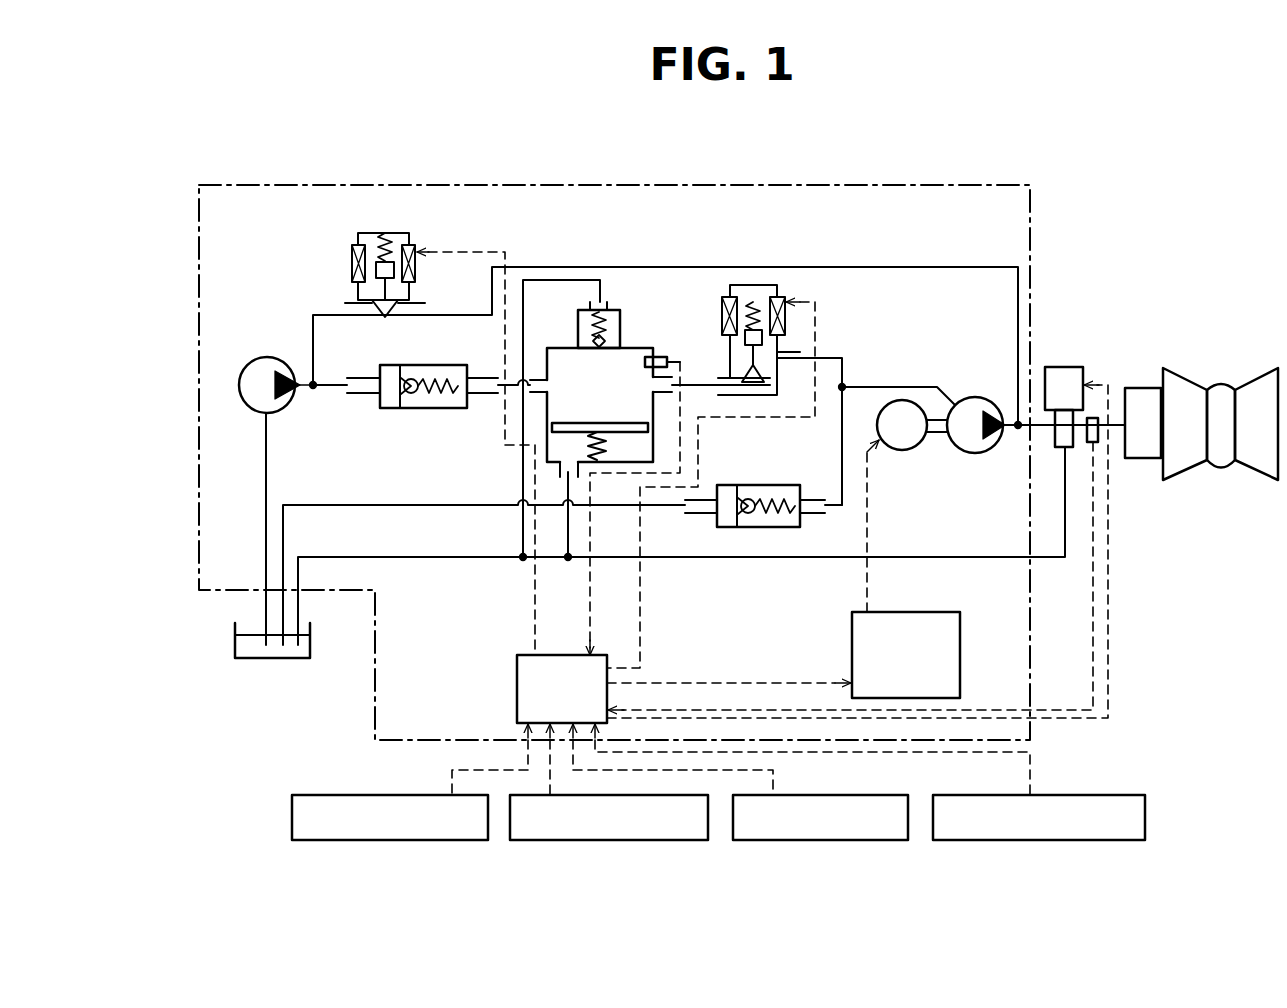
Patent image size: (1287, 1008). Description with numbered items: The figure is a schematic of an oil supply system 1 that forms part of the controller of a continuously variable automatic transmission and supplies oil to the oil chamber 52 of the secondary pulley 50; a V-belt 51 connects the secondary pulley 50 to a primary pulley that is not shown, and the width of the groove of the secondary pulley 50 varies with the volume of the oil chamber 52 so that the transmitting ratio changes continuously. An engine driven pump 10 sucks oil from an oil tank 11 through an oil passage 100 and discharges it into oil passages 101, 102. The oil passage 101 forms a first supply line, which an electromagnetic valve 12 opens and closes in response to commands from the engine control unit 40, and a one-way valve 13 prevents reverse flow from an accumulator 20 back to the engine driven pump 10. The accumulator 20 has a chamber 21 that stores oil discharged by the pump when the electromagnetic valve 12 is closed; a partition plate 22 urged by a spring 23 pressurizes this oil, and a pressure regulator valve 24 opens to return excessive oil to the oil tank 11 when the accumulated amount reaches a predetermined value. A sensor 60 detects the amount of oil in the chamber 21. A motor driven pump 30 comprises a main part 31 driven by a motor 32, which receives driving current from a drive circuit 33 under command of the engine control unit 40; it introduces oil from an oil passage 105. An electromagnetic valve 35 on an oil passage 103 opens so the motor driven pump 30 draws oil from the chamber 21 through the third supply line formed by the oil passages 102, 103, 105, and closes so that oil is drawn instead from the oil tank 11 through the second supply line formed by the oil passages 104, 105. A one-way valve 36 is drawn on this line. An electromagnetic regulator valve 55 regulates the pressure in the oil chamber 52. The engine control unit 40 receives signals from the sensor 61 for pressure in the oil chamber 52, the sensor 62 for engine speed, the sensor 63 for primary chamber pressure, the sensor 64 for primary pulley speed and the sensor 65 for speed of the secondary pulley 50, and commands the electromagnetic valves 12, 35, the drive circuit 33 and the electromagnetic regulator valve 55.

The oil supply system 1 is at (955, 185).
The engine driven pump 10 is at (250, 368).
The oil tank 11 is at (235, 640).
The electromagnetic valve 12 is at (352, 262).
The one-way valve 13 is at (397, 410).
The accumulator 20 is at (637, 348).
The chamber 21 is at (563, 355).
The partition plate 22 is at (552, 428).
The spring 23 is at (585, 446).
The pressure regulator valve 24 is at (623, 347).
The motor driven pump 30 is at (996, 504).
The main part 31 is at (1026, 450).
The motor 32 is at (902, 450).
The drive circuit 33 is at (963, 640).
The electromagnetic valve 35 is at (777, 297).
The check valve 36 is at (758, 485).
The engine control unit 40 is at (517, 672).
The secondary pulley 50 is at (1178, 375).
The V-belt 51 is at (1221, 380).
The oil chamber 52 is at (1133, 388).
The electromagnetic regulator valve 55 is at (1057, 367).
The sensor 60 is at (662, 357).
The sensor 61 is at (1093, 418).
The sensor 62 is at (328, 840).
The sensor 63 is at (545, 840).
The sensor 64 is at (752, 840).
The sensor 65 is at (965, 840).
The oil passage 100 is at (264, 515).
The oil passage 101 is at (313, 325).
The oil passage 102 is at (338, 390).
The oil passage 103 is at (703, 385).
The oil passage 104 is at (440, 510).
The oil passage 105 is at (910, 385).